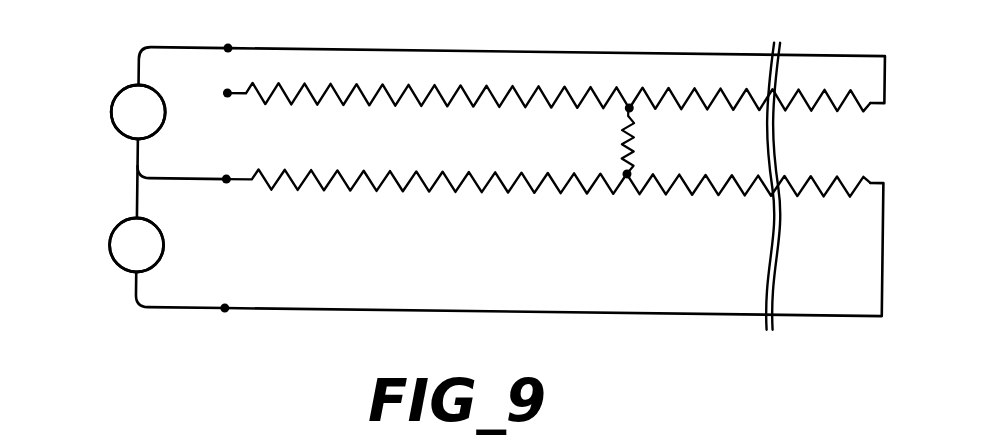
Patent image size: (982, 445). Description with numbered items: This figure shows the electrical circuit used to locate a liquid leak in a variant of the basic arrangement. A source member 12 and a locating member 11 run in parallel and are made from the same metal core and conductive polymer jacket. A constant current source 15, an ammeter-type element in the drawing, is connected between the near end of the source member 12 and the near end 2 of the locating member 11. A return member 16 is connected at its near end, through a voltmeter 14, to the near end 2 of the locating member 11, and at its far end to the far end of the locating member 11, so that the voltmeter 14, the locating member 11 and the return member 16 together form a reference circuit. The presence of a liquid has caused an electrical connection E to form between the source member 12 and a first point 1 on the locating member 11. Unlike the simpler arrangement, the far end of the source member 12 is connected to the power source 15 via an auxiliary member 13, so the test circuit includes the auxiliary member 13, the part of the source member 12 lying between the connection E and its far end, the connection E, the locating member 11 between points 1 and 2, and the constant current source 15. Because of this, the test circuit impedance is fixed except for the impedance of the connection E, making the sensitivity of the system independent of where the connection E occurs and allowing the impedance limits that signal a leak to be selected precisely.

The first point 1 is at (637, 213).
The near end 2 is at (247, 216).
The locating member 11 is at (440, 187).
The source member 12 is at (486, 92).
The auxiliary member 13 is at (436, 47).
The voltmeter 14 is at (115, 257).
The constant current source 15 is at (115, 123).
The return member 16 is at (481, 303).
The electrical connection E is at (641, 138).